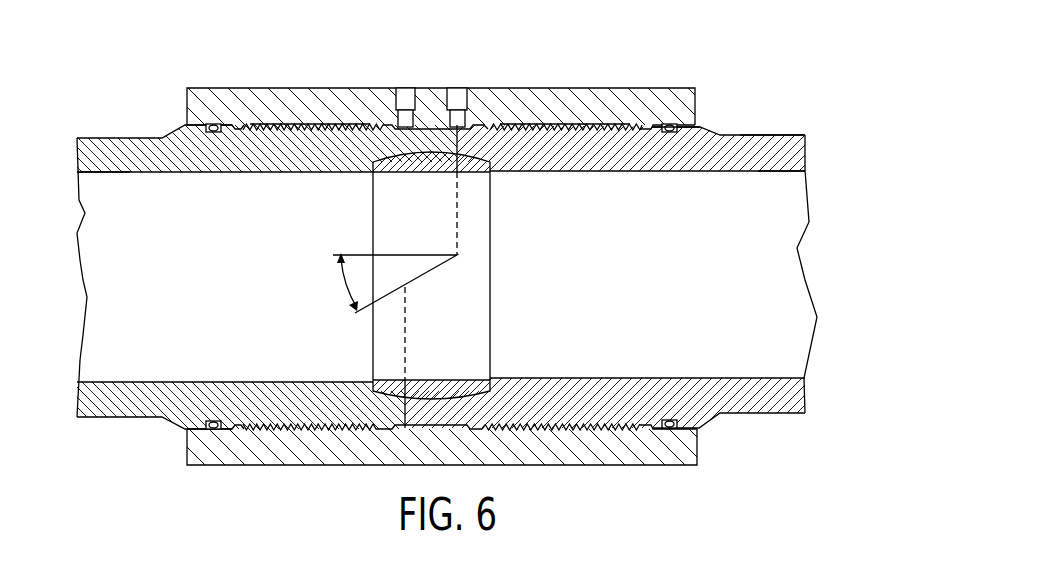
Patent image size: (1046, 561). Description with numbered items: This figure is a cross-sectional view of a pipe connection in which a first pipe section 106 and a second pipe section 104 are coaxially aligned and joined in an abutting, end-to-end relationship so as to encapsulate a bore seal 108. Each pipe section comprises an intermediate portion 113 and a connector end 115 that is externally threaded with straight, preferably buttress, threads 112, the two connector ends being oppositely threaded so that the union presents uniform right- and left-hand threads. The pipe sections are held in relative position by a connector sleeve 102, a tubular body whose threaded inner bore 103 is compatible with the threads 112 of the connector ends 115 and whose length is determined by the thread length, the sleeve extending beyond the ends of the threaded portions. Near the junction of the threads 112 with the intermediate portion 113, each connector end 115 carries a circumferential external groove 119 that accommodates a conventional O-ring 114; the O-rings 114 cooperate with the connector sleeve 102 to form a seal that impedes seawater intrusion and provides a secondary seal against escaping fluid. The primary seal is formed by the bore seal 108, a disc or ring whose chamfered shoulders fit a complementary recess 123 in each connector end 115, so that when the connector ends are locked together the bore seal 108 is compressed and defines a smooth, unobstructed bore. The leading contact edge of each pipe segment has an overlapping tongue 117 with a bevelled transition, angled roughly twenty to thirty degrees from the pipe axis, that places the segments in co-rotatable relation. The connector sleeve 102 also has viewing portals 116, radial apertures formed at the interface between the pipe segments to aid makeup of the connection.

The connector sleeve 102 is at (591, 83).
The threaded inner bore 103 is at (333, 123).
The second pipe section 104 is at (756, 128).
The first pipe section 106 is at (143, 132).
The bore seal 108 is at (490, 300).
The threads 112 is at (538, 128).
The intermediate portion 113 is at (647, 155).
The O-ring 114 is at (213, 124).
The connector end 115 is at (232, 157).
The viewing portal 116 is at (456, 92).
The overlapping tongue 117 is at (373, 357).
The external groove 119 is at (214, 422).
The recess 123 is at (430, 152).